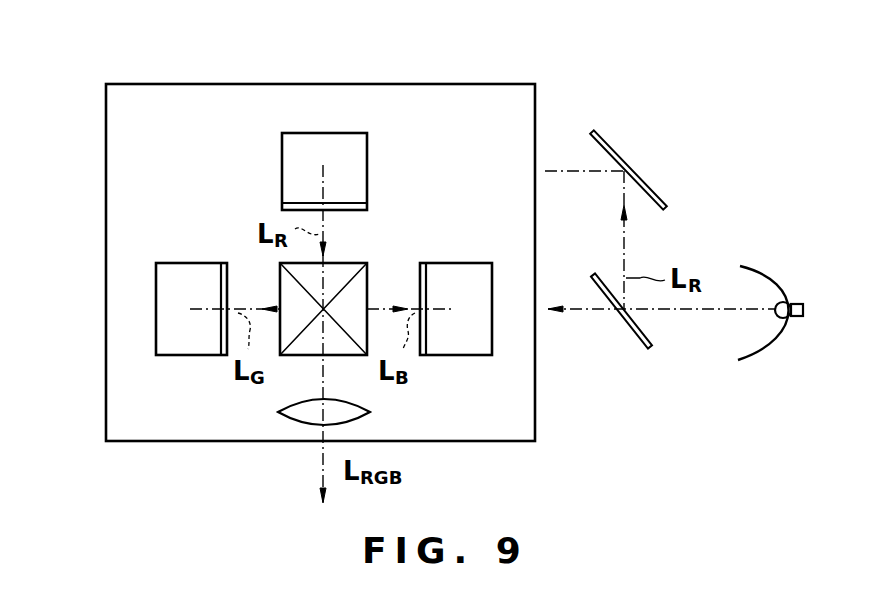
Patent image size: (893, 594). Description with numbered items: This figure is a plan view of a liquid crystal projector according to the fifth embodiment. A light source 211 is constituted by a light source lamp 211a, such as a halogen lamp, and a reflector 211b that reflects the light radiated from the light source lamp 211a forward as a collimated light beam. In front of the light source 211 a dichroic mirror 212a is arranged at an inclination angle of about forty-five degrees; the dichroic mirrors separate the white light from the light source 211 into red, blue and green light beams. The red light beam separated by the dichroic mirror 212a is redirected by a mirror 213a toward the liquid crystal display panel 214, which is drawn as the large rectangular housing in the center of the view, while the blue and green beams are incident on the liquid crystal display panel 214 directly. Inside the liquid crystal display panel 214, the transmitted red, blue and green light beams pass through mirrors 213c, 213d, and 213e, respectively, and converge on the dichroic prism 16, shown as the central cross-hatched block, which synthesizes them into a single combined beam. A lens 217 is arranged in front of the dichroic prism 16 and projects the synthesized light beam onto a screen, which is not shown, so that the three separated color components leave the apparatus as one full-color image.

The liquid crystal display panel 214 is at (370, 83).
The mirror 213c is at (367, 172).
The mirror 213d is at (195, 262).
The mirror 213e is at (462, 262).
The cross dichroic prism 16 is at (359, 262).
The lens 217 is at (360, 400).
The mirror 213a is at (604, 143).
The dichroic mirror 212a is at (637, 342).
The light source 211 is at (808, 306).
The light source lamp 211a is at (786, 300).
The reflector 211b is at (757, 354).